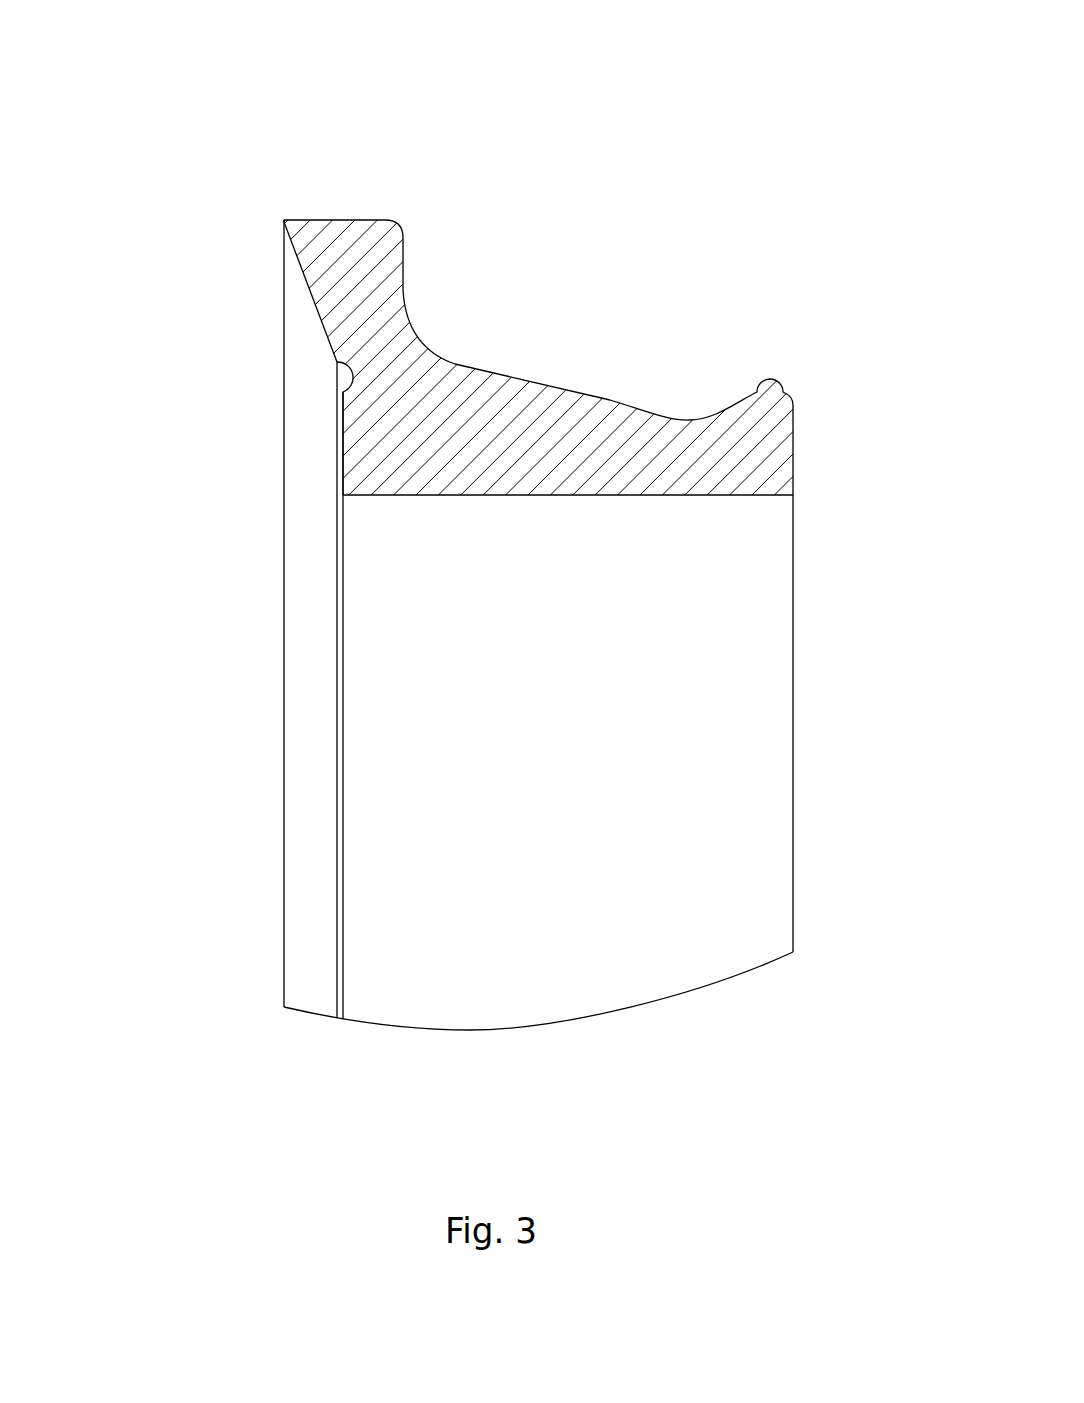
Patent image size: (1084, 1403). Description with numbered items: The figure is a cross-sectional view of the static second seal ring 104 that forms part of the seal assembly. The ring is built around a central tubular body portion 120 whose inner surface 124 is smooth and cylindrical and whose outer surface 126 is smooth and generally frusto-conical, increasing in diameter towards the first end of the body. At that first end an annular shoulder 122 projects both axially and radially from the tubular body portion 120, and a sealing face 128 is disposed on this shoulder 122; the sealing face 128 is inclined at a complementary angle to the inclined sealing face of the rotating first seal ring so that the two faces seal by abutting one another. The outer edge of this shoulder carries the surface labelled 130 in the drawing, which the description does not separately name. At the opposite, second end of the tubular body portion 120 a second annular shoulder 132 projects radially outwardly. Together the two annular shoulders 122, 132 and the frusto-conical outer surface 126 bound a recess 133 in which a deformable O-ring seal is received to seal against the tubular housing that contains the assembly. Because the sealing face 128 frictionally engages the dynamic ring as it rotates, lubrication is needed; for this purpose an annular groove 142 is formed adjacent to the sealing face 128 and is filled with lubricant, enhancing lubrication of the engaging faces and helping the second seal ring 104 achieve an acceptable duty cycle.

The second seal ring 104 is at (726, 128).
The central tubular body portion 120 is at (563, 441).
The annular shoulder 122 is at (355, 262).
The inner surface 124 is at (567, 495).
The outer surface 126 is at (488, 368).
The sealing face 128 is at (308, 285).
The top surface 130 is at (348, 220).
The second annular shoulder 132 is at (776, 402).
The recess 133 is at (566, 368).
The annular groove 142 is at (350, 372).